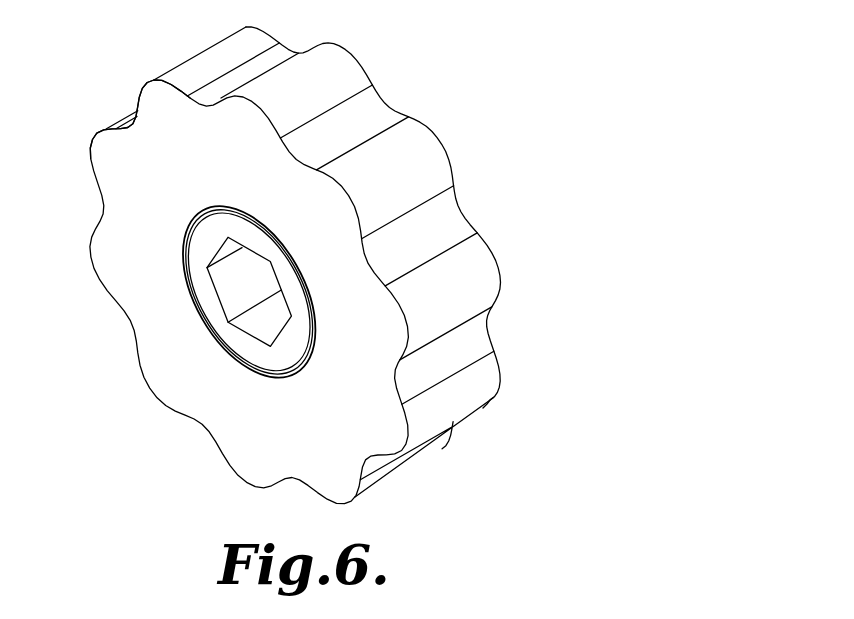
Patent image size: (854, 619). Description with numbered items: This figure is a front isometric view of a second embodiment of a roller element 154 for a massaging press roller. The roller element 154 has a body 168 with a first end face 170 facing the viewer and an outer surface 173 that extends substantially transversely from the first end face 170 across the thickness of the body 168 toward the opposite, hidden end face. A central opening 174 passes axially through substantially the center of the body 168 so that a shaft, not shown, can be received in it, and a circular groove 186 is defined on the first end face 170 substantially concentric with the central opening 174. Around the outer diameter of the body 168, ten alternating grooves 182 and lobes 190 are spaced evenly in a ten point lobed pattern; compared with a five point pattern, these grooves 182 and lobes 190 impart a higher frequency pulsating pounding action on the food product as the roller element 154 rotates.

The roller element 154 is at (283, 257).
The body 168 is at (148, 311).
The first end face 170 is at (132, 218).
The outer surface 173 is at (343, 71).
The central opening 174 is at (258, 325).
The grooves 182 is at (457, 211).
The circular groove 186 is at (183, 258).
The lobes 190 is at (433, 143).